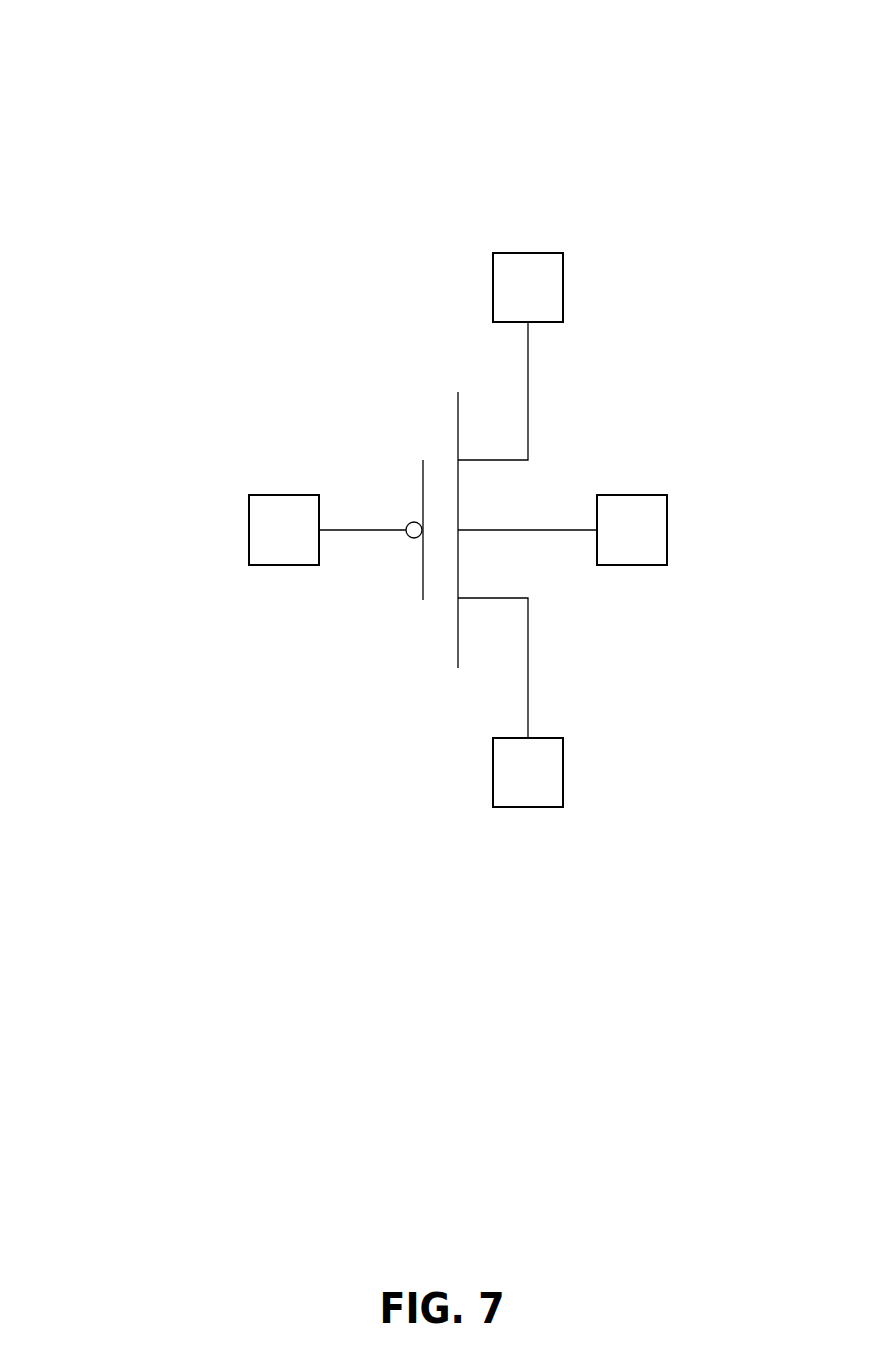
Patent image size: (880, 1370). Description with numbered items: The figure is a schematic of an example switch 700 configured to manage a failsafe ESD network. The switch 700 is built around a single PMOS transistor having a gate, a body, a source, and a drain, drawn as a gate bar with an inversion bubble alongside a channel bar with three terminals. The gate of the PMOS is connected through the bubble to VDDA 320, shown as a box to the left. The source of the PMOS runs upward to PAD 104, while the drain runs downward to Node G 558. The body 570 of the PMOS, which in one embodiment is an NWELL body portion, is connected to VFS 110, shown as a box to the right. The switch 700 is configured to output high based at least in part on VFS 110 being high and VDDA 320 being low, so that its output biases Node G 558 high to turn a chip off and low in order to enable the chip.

The switch 700 is at (137, 66).
The PAD 104 is at (527, 253).
The body 570 is at (492, 530).
The VFS 110 is at (667, 527).
The VDDA 320 is at (284, 495).
The Node G 558 is at (563, 768).